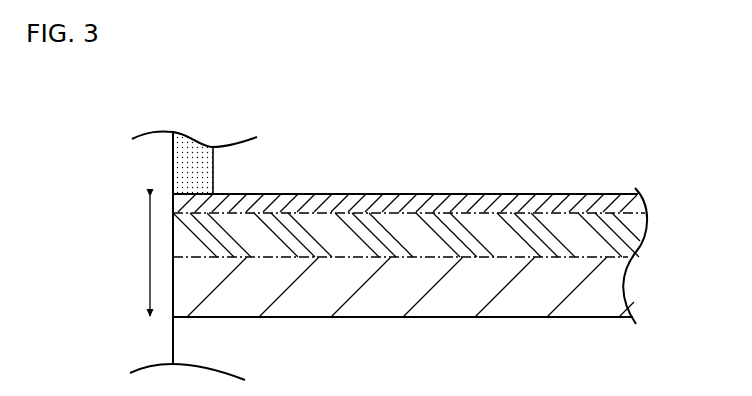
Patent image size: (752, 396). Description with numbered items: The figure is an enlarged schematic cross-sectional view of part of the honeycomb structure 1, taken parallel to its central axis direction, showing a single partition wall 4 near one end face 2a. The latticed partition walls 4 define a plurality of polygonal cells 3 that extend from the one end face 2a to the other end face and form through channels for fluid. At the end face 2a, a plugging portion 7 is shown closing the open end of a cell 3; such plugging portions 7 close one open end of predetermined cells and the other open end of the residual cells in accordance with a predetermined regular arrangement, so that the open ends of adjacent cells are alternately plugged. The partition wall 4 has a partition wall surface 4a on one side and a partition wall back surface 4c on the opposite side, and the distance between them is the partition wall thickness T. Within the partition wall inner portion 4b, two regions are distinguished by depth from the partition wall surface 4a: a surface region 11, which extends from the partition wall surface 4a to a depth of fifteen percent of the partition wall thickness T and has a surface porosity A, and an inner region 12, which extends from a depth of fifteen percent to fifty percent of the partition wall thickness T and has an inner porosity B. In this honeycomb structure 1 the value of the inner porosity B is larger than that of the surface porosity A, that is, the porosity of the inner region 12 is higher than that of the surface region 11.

The honeycomb structure 1 is at (274, 102).
The one end face 2a is at (173, 159).
The cell 3 is at (438, 246).
The partition wall 4 is at (438, 259).
The partition wall surface 4a is at (393, 194).
The partition wall inner portion 4b is at (610, 277).
The partition wall back surface 4c is at (397, 318).
The plugging portion 7 is at (181, 180).
The surface region 11 is at (656, 196).
The inner region 12 is at (656, 215).
The partition wall thickness T is at (150, 257).